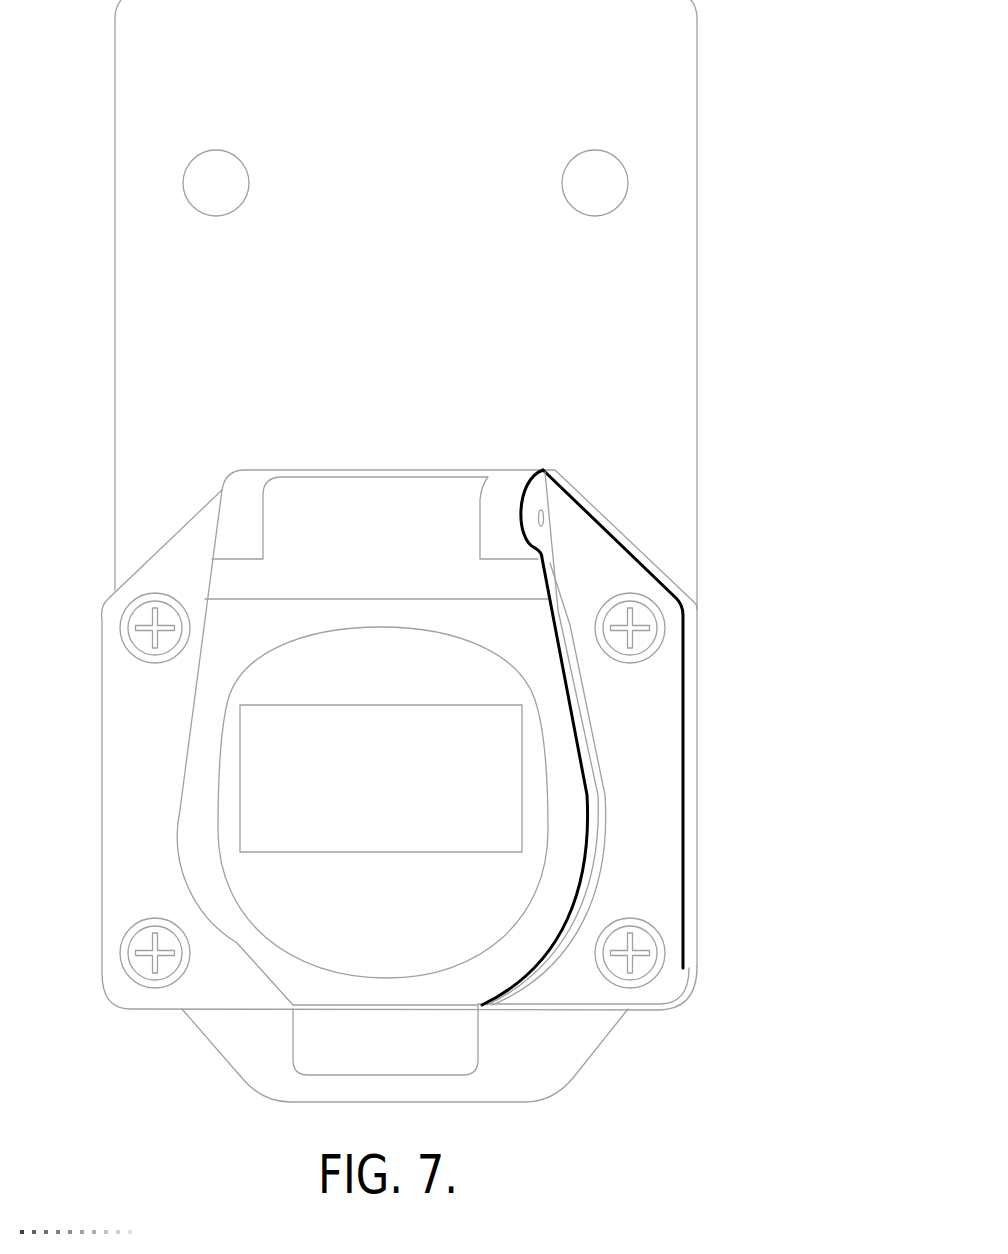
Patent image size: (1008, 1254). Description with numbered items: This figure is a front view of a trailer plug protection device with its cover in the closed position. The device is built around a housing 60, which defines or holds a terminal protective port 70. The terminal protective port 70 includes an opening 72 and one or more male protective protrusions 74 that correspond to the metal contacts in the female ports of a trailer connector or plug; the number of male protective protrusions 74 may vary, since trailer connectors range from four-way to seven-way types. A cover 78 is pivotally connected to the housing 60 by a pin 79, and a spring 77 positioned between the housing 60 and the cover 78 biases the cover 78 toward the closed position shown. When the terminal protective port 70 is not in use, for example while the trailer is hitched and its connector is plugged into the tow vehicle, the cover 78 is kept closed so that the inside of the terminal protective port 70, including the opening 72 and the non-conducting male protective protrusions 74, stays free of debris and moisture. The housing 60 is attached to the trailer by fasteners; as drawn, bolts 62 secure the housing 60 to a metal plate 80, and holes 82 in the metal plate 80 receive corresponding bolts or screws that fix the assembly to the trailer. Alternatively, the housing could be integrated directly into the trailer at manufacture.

The housing 60 is at (679, 737).
The bolts 62 is at (667, 618).
The terminal protective port 70 is at (679, 737).
The opening 72 is at (679, 737).
The male protective protrusions 74 is at (620, 758).
The spring 77 is at (393, 507).
The cover 78 is at (197, 770).
The pin 79 is at (548, 516).
The metal plate 80 is at (682, 302).
The holes 82 is at (628, 190).